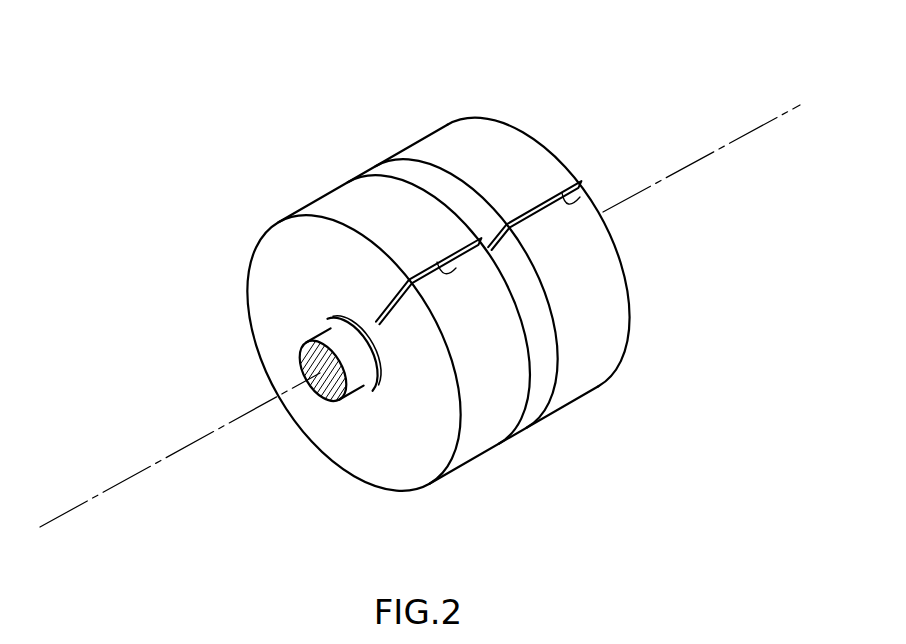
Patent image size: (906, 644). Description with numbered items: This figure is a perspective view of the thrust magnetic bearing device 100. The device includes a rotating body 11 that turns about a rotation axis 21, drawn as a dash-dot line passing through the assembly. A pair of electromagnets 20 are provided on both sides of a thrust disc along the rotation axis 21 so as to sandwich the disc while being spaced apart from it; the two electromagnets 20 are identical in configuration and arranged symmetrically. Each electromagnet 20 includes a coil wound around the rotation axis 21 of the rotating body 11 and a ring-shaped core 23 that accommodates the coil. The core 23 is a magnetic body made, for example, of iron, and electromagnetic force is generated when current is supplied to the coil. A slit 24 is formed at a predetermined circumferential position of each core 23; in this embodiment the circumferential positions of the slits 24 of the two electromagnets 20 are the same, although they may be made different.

The thrust magnetic bearing device 100 is at (193, 136).
The electromagnet 20 is at (300, 208).
The core 23 is at (358, 192).
The slit 24 is at (458, 270).
The rotating body 11 is at (364, 372).
The rotation axis 21 is at (749, 130).